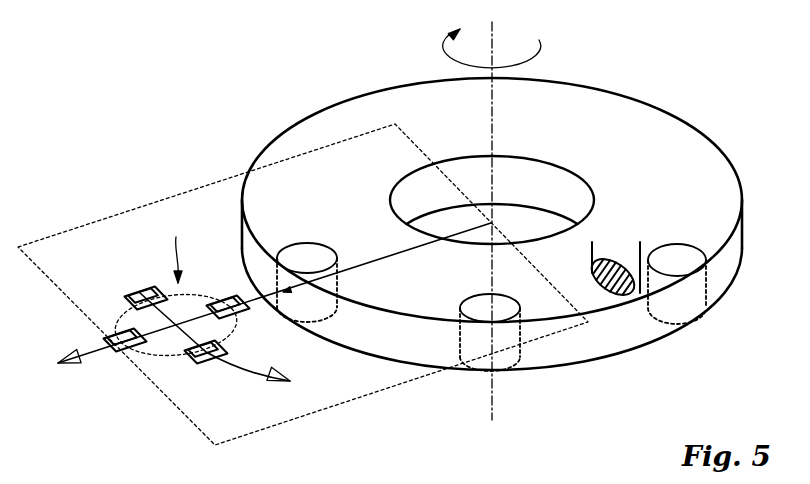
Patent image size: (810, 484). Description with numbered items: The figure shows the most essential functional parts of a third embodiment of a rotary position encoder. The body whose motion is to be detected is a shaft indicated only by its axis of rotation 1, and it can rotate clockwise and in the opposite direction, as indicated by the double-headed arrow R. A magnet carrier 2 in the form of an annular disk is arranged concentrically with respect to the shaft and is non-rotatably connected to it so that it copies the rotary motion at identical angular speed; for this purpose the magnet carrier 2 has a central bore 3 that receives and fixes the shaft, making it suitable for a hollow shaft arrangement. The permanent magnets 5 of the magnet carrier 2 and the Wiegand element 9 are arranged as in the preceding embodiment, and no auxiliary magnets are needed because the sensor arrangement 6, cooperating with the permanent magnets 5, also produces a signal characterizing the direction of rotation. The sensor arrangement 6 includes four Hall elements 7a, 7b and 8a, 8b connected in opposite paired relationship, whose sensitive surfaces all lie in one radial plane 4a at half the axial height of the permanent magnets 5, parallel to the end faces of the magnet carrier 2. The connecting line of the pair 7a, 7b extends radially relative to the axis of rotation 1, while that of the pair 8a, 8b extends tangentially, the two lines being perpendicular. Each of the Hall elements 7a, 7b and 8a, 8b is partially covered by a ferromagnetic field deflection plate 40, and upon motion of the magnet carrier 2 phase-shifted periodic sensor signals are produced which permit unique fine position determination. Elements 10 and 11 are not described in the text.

The axis of rotation 1 is at (492, 123).
The magnet carrier 2 is at (682, 136).
The central bore 3 is at (463, 176).
The radial plane 4a is at (142, 217).
The permanent magnets 5 is at (310, 255).
The sensor arrangement 6 is at (173, 246).
The Hall element 7a is at (120, 355).
The Hall element 7b is at (232, 303).
The Hall element 8a is at (144, 295).
The Hall element 8b is at (202, 360).
The Wiegand element 9 is at (620, 244).
The coil 10 is at (634, 298).
The coil holder / core 11 is at (608, 255).
The ferromagnetic field deflection plate 40 is at (274, 327).
The double-headed arrow R is at (539, 40).